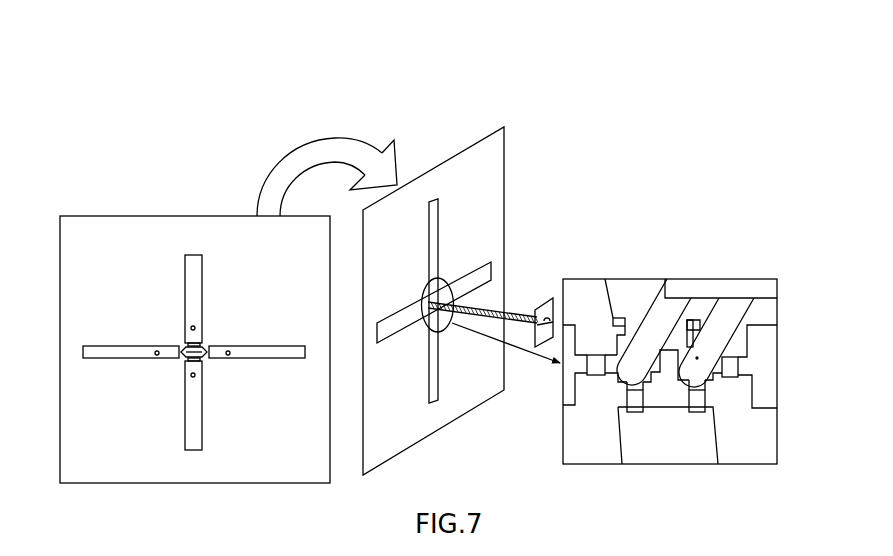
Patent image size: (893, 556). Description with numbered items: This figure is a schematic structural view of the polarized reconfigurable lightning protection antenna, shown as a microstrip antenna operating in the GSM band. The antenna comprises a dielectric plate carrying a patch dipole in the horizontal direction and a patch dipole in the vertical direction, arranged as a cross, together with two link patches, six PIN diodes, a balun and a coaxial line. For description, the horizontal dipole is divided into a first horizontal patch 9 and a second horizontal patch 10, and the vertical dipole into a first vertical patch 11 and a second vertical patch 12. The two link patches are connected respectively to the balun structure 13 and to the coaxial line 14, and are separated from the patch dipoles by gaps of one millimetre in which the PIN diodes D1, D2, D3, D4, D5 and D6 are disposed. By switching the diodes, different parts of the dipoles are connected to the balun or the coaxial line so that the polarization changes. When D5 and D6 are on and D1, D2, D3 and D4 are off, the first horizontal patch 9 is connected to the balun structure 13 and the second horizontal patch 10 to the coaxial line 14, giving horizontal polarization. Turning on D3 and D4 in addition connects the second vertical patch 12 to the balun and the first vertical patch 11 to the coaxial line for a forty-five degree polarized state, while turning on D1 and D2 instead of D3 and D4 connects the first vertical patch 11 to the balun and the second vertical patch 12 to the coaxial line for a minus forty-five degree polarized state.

The first horizontal patch 9 is at (398, 332).
The second horizontal patch 10 is at (97, 344).
The first vertical patch 11 is at (208, 288).
The second vertical patch 12 is at (208, 430).
The balun structure 13 is at (653, 313).
The coaxial line 14 is at (715, 330).
The PIN diode D1 is at (617, 320).
The PIN diode D2 is at (694, 415).
The PIN diode D3 is at (700, 322).
The PIN diode D4 is at (635, 415).
The PIN diode D5 is at (592, 378).
The PIN diode D6 is at (731, 380).